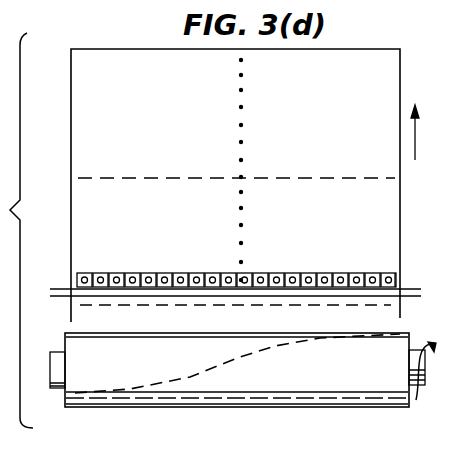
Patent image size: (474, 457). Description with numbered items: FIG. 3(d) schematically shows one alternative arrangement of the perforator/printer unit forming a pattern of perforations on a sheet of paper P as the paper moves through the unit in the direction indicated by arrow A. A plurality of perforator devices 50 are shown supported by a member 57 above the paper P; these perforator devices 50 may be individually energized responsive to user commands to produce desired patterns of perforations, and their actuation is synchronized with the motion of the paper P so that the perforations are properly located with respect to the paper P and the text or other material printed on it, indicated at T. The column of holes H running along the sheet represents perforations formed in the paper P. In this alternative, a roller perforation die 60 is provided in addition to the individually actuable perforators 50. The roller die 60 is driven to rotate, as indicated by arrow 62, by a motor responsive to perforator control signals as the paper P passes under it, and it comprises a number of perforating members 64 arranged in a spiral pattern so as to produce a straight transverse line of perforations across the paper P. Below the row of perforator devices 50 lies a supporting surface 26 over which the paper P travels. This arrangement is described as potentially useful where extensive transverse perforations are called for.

The sheet of paper P is at (72, 115).
The perforations H is at (244, 91).
The arrow A is at (422, 132).
The platen 26 is at (62, 288).
The perforator devices 50 is at (163, 272).
The member 57 is at (414, 287).
The roller perforation die 60 is at (115, 405).
The arrow 62 is at (418, 402).
The perforating members 64 is at (198, 366).
The text or other material printed thereon T is at (286, 368).